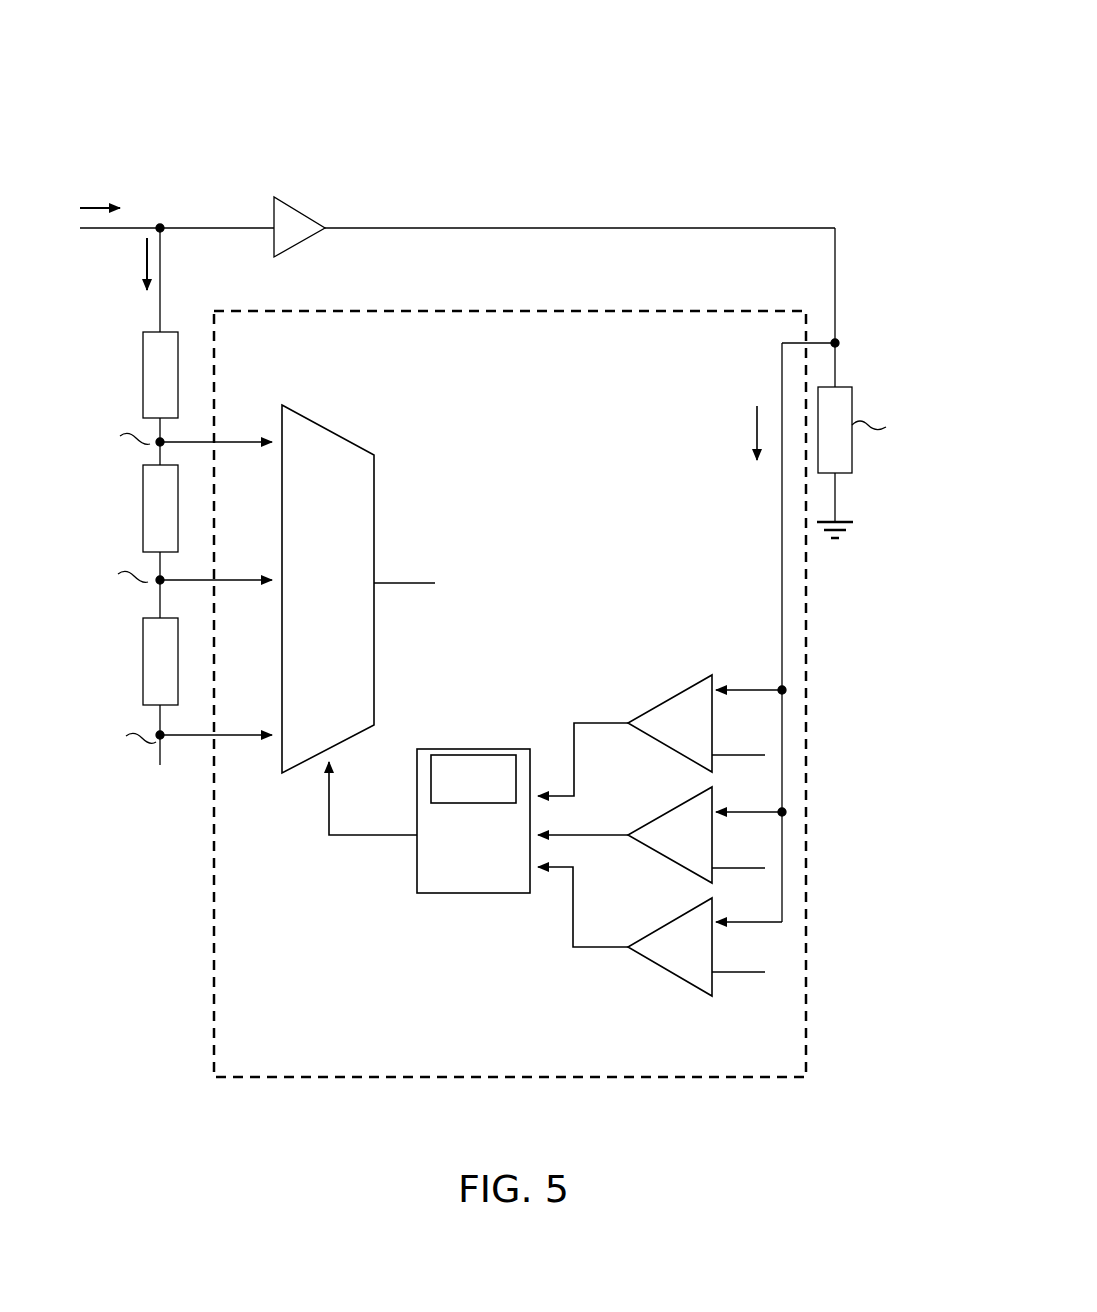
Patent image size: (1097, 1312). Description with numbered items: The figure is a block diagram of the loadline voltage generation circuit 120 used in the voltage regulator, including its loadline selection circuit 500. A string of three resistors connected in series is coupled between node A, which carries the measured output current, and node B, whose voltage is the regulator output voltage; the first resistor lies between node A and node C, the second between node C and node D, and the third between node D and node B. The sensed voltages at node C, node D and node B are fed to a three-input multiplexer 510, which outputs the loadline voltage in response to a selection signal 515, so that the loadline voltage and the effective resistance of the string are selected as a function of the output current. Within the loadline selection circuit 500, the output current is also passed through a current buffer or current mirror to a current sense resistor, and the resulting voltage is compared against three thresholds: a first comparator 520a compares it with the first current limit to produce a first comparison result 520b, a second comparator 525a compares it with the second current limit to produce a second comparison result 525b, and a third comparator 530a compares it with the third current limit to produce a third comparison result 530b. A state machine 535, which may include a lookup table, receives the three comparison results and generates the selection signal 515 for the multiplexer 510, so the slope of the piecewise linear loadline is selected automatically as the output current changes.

The loadline voltage generation circuit 120 is at (748, 40).
The loadline selection circuit 500 is at (510, 694).
The three-input multiplexer 510 is at (376, 589).
The selection signal 515 is at (345, 840).
The first comparator 520a is at (650, 703).
The first comparison result 520b is at (590, 720).
The second comparator 525a is at (650, 817).
The second comparison result 525b is at (600, 838).
The third comparator 530a is at (633, 948).
The third comparison result 530b is at (573, 930).
The state machine 535 is at (473, 821).